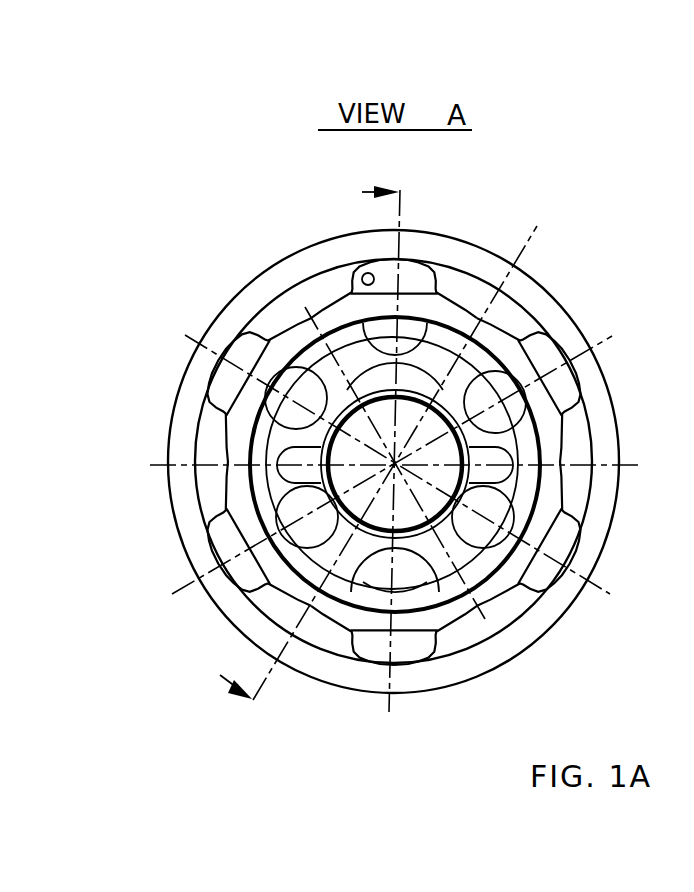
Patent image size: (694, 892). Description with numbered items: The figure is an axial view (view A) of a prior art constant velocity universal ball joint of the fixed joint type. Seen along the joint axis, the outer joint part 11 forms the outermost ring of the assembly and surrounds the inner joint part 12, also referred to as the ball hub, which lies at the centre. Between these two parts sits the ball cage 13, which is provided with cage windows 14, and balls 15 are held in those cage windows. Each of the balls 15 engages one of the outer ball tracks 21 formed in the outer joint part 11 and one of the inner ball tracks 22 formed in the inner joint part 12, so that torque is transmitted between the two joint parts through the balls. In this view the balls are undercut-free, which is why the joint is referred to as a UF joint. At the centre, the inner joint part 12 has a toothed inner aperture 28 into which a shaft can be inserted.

The outer joint part 11 is at (298, 261).
The inner joint part 12 is at (520, 336).
The ball cage 13 is at (445, 341).
The cage windows 14 is at (421, 284).
The balls 15 is at (464, 370).
The outer ball tracks 21 is at (364, 274).
The inner ball tracks 22 is at (547, 304).
The toothed inner aperture 28 is at (472, 454).